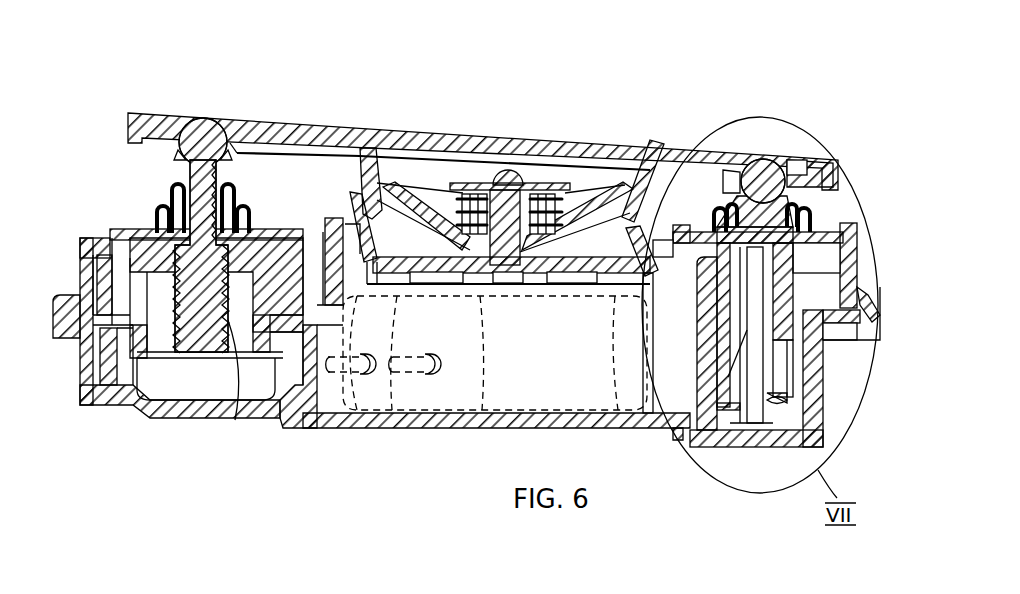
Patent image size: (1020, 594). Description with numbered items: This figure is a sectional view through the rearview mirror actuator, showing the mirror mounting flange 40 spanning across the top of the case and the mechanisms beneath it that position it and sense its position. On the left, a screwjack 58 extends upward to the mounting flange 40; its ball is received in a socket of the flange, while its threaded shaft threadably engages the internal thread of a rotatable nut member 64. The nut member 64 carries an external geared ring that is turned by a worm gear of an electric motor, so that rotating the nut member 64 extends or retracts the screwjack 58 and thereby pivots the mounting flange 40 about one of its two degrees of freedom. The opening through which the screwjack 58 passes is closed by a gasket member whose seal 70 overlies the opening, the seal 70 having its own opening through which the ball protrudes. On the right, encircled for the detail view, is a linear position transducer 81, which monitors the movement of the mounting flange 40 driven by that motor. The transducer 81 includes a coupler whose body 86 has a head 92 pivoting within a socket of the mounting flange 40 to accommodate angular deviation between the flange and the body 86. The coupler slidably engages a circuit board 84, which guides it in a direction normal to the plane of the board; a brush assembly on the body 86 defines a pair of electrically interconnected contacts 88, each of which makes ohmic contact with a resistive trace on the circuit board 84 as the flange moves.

The mirror mounting flange 40 is at (319, 118).
The screwjack 58 is at (240, 410).
The rotatable nut member 64 is at (155, 287).
The seal 70 is at (800, 215).
The linear position transducer 81 is at (761, 156).
The circuit board 84 is at (742, 420).
The body 86 is at (795, 267).
The contact 88 is at (733, 362).
The head 92 is at (773, 165).